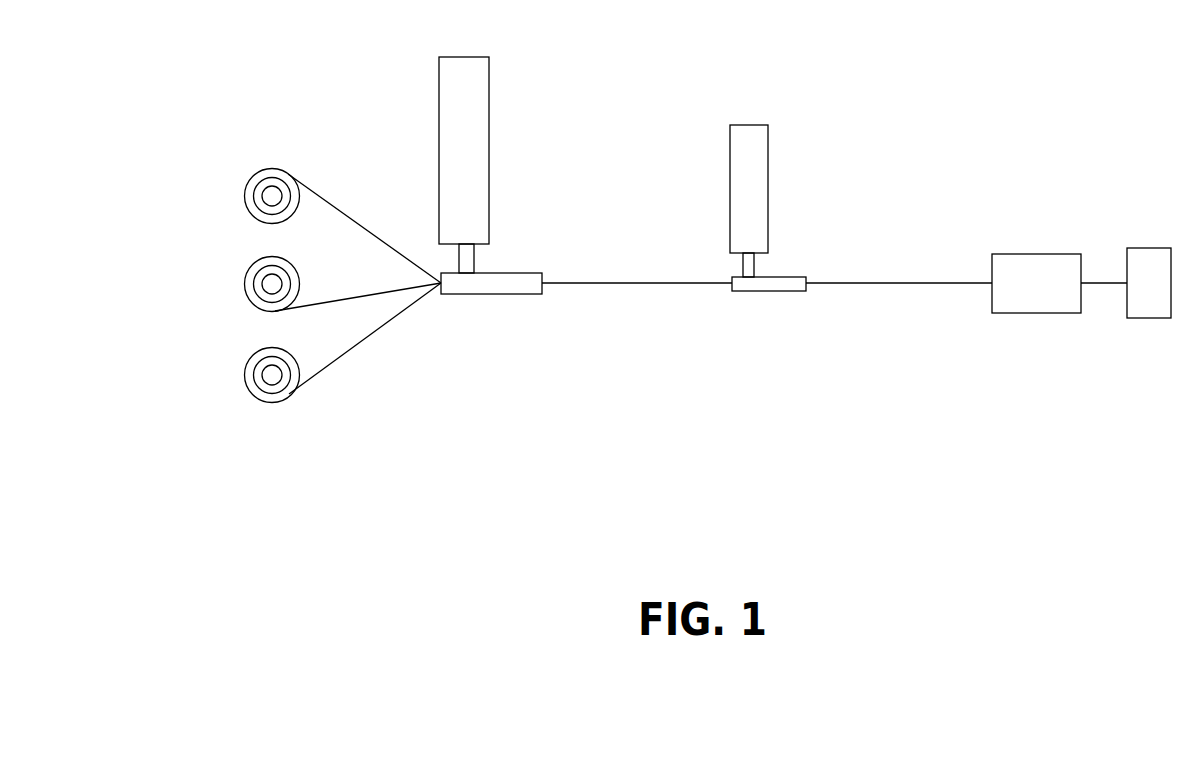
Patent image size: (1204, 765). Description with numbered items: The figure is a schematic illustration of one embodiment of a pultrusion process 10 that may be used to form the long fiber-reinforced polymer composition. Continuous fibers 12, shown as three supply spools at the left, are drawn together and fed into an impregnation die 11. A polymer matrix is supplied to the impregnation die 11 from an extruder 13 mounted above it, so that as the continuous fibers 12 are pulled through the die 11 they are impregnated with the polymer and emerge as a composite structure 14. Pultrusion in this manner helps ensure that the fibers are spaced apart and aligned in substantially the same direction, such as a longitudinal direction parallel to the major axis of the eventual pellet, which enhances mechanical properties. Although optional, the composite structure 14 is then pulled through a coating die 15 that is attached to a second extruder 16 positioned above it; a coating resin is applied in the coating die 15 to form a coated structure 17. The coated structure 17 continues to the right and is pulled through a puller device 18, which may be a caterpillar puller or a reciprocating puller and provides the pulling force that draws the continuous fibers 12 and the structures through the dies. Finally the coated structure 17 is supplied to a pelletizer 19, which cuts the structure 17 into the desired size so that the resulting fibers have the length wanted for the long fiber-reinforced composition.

The pultrusion process 10 is at (709, 370).
The impregnation die 11 is at (507, 294).
The continuous fibers 12 is at (277, 402).
The extruder 13 is at (489, 99).
The composite structure 14 is at (600, 283).
The coating die 15 is at (783, 291).
The extruder 16 is at (768, 188).
The coated structure 17 is at (917, 283).
The puller device 18 is at (1037, 254).
The pelletizer 19 is at (1150, 318).